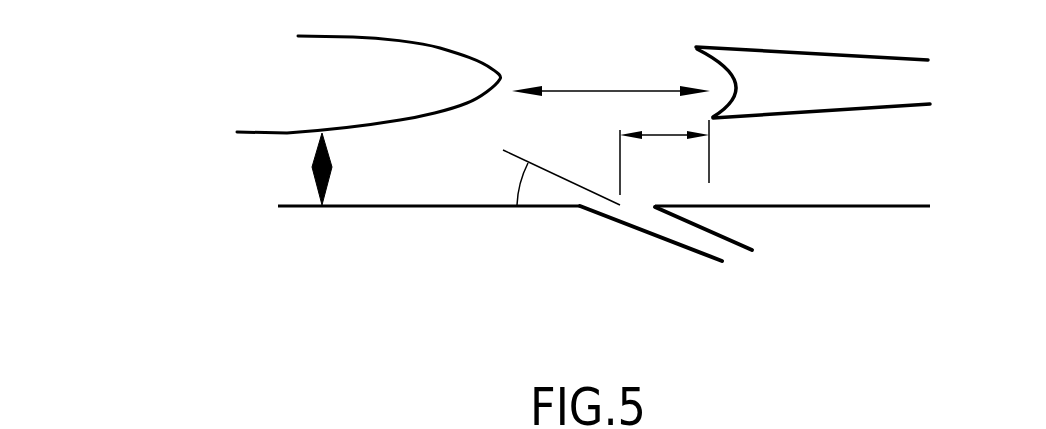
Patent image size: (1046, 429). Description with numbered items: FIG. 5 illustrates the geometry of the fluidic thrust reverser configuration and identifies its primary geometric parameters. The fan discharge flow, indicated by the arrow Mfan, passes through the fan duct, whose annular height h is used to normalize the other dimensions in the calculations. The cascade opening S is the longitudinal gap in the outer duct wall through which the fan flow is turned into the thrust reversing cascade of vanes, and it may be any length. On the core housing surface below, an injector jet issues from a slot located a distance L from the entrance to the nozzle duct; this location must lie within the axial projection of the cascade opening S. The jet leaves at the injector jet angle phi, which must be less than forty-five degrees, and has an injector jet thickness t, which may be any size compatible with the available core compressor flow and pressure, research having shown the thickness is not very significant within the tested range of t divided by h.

The fan duct annular height h is at (340, 169).
The cascade opening S is at (611, 74).
The distance of the injector jet from the entrance to the nozzle duct L is at (664, 157).
The angle of the injector jet phi is at (502, 184).
The injector jet thickness t is at (742, 265).
The fan flow Mach number direction Mfan is at (243, 178).